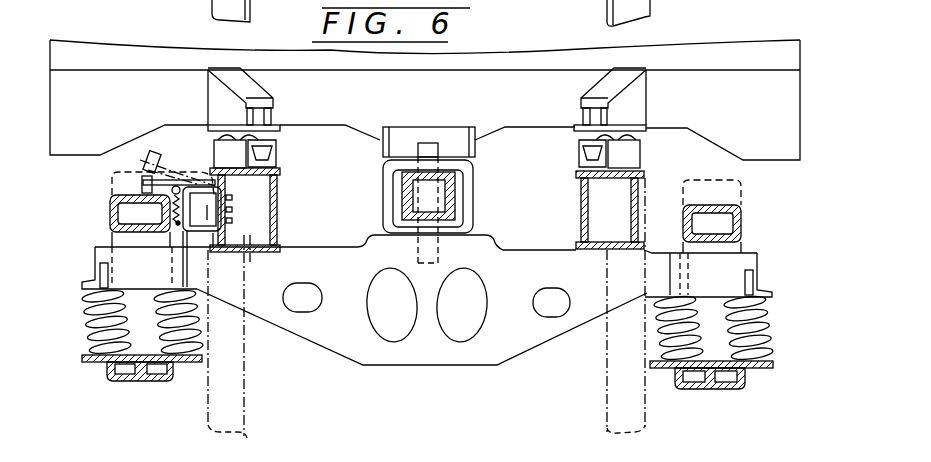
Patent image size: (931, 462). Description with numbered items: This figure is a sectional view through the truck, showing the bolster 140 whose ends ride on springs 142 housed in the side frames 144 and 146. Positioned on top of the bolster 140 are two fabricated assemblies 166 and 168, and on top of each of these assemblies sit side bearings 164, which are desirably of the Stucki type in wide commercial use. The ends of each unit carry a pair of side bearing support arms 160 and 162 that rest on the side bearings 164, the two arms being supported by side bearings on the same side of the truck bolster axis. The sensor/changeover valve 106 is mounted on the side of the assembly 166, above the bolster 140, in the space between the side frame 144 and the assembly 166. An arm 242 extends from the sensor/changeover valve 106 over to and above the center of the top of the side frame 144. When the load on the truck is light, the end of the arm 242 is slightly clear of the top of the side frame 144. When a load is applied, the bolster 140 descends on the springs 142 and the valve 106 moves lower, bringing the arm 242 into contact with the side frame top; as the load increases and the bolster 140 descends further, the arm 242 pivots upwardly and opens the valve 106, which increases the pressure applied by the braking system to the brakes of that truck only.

The sensor/changeover valve 106 is at (212, 225).
The bolster 140 is at (322, 337).
The springs 142 is at (90, 333).
The side frame 144 is at (112, 210).
The side frame 146 is at (738, 217).
The side bearing support arm 160 is at (222, 96).
The side bearing support arm 162 is at (630, 112).
The side bearings 164 is at (272, 157).
The fabricated assembly 166 is at (276, 218).
The fabricated assembly 168 is at (582, 200).
The arm 242 is at (176, 186).